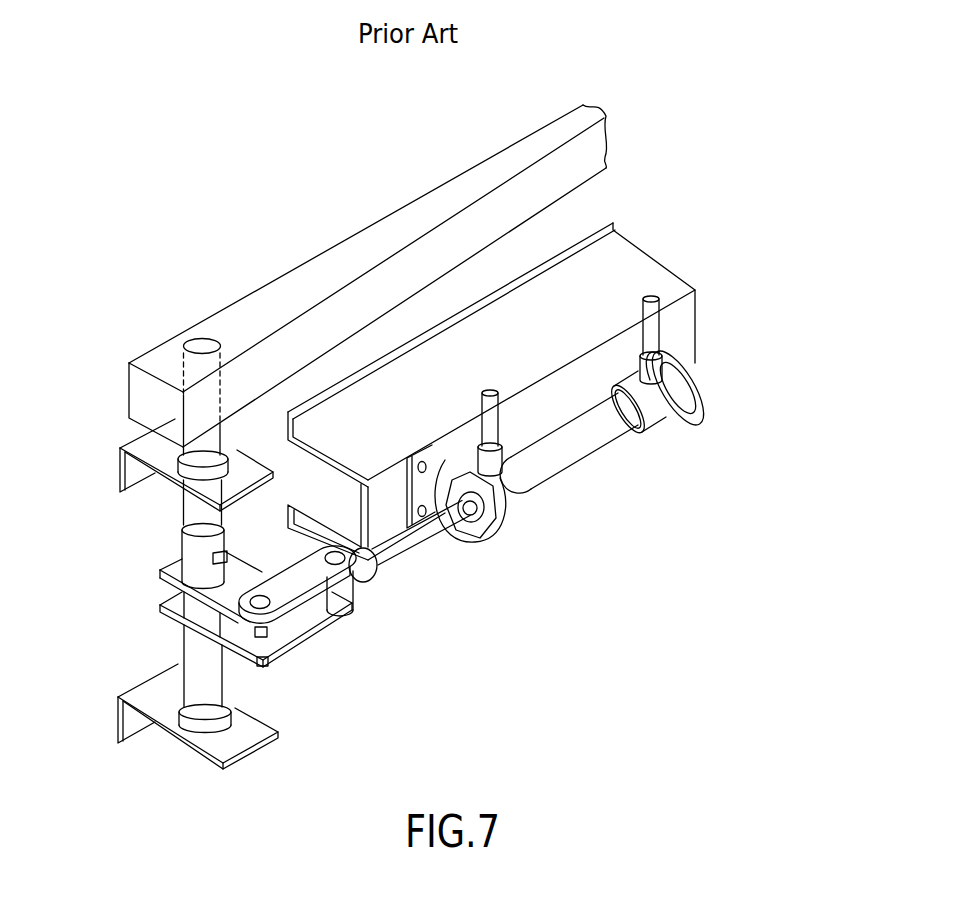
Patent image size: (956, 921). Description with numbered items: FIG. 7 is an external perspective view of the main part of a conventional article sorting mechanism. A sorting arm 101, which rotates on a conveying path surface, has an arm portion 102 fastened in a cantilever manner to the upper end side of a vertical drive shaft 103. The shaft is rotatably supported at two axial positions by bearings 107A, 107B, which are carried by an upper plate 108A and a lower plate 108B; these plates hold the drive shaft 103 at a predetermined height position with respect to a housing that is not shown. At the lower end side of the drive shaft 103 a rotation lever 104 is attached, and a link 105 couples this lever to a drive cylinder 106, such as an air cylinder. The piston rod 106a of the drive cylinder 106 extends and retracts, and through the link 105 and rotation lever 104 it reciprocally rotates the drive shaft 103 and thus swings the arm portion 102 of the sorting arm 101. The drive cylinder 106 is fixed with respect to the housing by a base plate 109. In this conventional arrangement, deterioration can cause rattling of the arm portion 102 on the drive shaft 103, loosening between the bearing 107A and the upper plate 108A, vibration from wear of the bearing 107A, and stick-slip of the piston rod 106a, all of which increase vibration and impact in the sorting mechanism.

The sorting arm 101 is at (374, 460).
The arm portion 102 is at (402, 207).
The drive shaft 103 is at (201, 342).
The rotation lever 104 is at (157, 620).
The link 105 is at (317, 631).
The drive cylinder 106 is at (593, 453).
The piston rod 106a is at (441, 530).
The bearing 107A is at (178, 470).
The bearing 107B is at (189, 723).
The upper plate 108A is at (117, 462).
The lower plate 108B is at (243, 753).
The base plate 109 is at (645, 268).